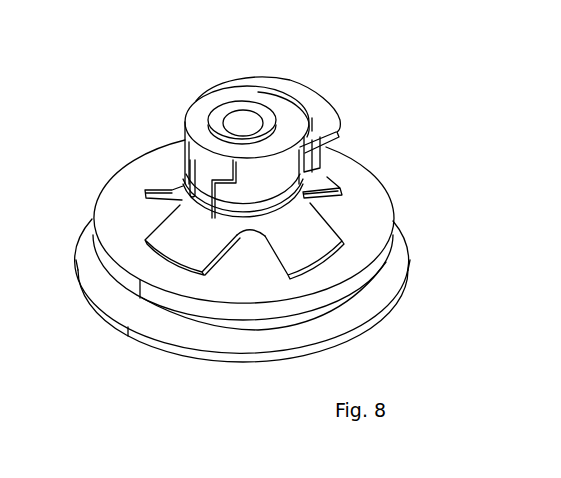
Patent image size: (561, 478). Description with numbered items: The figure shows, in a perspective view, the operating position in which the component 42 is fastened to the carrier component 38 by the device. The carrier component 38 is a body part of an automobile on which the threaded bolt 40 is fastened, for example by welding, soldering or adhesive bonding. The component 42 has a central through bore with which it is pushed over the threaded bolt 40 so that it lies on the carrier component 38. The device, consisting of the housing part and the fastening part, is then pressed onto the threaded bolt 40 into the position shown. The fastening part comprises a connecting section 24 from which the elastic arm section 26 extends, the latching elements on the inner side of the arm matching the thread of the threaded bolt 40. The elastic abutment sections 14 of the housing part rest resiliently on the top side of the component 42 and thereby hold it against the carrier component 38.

The elastic abutment sections 14 is at (313, 240).
The connecting section 24 is at (308, 94).
The elastic arm section 26 is at (280, 178).
The carrier component 38 is at (91, 267).
The threaded bolt 40 is at (243, 120).
The component 42 is at (125, 192).